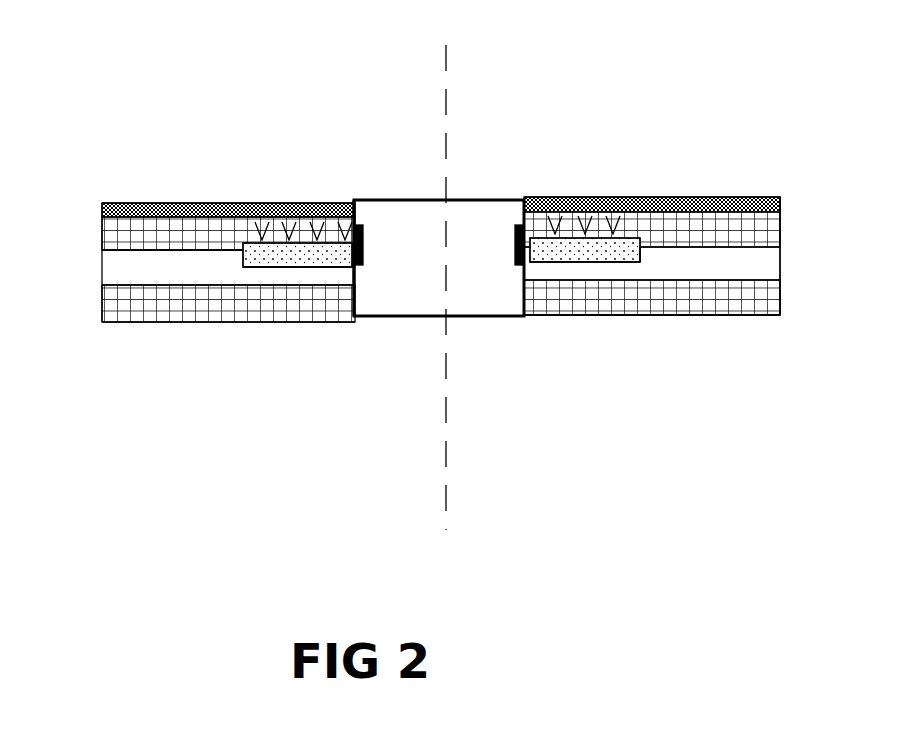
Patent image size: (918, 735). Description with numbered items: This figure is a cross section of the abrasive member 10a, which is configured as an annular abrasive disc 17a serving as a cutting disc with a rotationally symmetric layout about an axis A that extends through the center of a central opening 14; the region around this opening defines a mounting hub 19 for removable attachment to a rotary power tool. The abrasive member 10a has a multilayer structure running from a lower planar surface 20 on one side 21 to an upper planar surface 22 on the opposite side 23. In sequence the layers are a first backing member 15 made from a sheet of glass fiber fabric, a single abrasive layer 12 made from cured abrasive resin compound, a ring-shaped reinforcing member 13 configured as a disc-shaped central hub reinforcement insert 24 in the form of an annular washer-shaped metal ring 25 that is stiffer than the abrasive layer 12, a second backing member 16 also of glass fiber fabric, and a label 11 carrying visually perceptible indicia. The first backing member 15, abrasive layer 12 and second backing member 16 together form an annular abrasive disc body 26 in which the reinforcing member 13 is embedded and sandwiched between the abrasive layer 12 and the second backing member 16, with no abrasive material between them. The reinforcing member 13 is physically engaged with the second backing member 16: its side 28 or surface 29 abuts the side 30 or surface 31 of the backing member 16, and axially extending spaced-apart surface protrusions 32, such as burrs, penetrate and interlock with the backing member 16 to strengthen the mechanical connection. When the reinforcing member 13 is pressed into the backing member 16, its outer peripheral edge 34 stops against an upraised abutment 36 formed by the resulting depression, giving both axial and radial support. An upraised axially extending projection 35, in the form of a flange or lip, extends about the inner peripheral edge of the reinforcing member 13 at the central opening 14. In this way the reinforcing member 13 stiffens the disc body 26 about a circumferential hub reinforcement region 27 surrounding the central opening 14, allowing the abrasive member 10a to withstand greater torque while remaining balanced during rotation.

The abrasive member 10a is at (648, 170).
The label 11 is at (152, 203).
The abrasive layer 12 is at (193, 278).
The reinforcing member 13 is at (292, 205).
The central opening 14 is at (462, 283).
The first backing member 15 is at (780, 280).
The second backing member 16 is at (780, 243).
The abrasive disc 17a is at (185, 378).
The mounting hub 19 is at (545, 170).
The lower planar surface 20 is at (605, 300).
The one side 21 is at (565, 318).
The upper planar surface 22 is at (128, 203).
The opposite side 23 is at (103, 198).
The central hub reinforcement insert 24 is at (300, 267).
The metal ring 25 is at (617, 263).
The abrasive disc body 26 is at (98, 332).
The circumferential hub reinforcement region 27 is at (337, 178).
The side of reinforcing member 28 is at (640, 238).
The surface of reinforcing member 29 is at (276, 253).
The side of backing member 30 is at (157, 262).
The surface of backing member 31 is at (733, 248).
The surface protrusions 32 is at (627, 238).
The outer peripheral edge 34 is at (640, 242).
The axially extending projection 35 is at (373, 205).
The upraised abutment 36 is at (640, 240).
The axis A is at (447, 52).